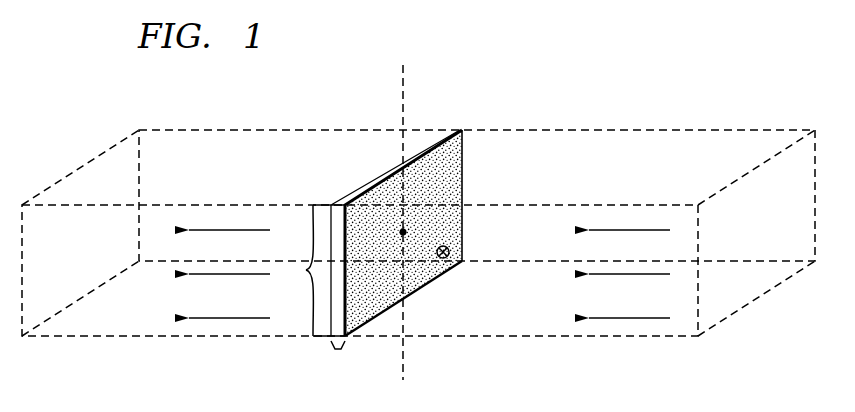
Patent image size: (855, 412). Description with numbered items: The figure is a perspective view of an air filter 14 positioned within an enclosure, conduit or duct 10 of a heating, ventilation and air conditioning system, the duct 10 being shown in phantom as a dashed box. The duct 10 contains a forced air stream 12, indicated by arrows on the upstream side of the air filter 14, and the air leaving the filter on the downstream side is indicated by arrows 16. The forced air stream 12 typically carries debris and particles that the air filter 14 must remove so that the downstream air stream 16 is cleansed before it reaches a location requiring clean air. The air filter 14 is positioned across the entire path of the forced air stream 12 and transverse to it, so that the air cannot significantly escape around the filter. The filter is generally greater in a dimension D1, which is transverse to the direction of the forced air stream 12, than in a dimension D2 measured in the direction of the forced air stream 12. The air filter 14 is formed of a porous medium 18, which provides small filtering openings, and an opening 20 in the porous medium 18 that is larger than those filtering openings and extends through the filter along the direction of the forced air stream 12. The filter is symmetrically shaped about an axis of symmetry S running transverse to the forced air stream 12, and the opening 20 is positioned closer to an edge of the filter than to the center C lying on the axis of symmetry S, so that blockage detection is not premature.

The duct 10 is at (633, 130).
The forced air stream 12 is at (627, 229).
The air filter 14 is at (453, 128).
The downstream air stream 16 is at (226, 229).
The porous medium 18 is at (417, 278).
The opening 20 is at (449, 249).
The center C is at (404, 231).
The dimension transverse to the forced air stream D1 is at (309, 270).
The dimension in direction of forced air stream D2 is at (339, 361).
The axis of symmetry S is at (403, 226).